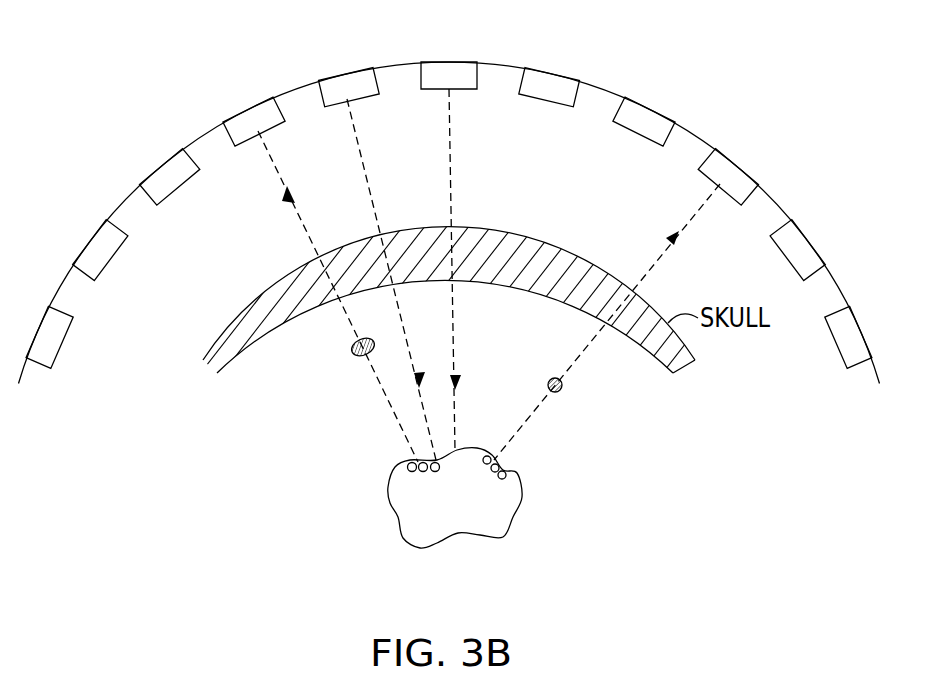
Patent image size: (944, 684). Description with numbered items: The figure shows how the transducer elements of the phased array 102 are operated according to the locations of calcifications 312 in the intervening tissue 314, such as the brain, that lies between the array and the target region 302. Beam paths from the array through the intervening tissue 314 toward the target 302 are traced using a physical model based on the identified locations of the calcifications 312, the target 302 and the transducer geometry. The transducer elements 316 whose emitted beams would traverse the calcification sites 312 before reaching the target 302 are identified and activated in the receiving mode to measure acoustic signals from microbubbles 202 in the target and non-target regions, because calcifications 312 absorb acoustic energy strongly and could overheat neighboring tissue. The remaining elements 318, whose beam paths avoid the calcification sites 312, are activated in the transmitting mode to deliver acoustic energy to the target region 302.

The phased array 102 is at (690, 132).
The transducer elements 316 is at (247, 117).
The remaining elements 318 is at (455, 69).
The intervening tissue 314 is at (637, 436).
The calcifications 312 is at (352, 349).
The target region 302 is at (433, 493).
The microbubbles 202 is at (503, 470).